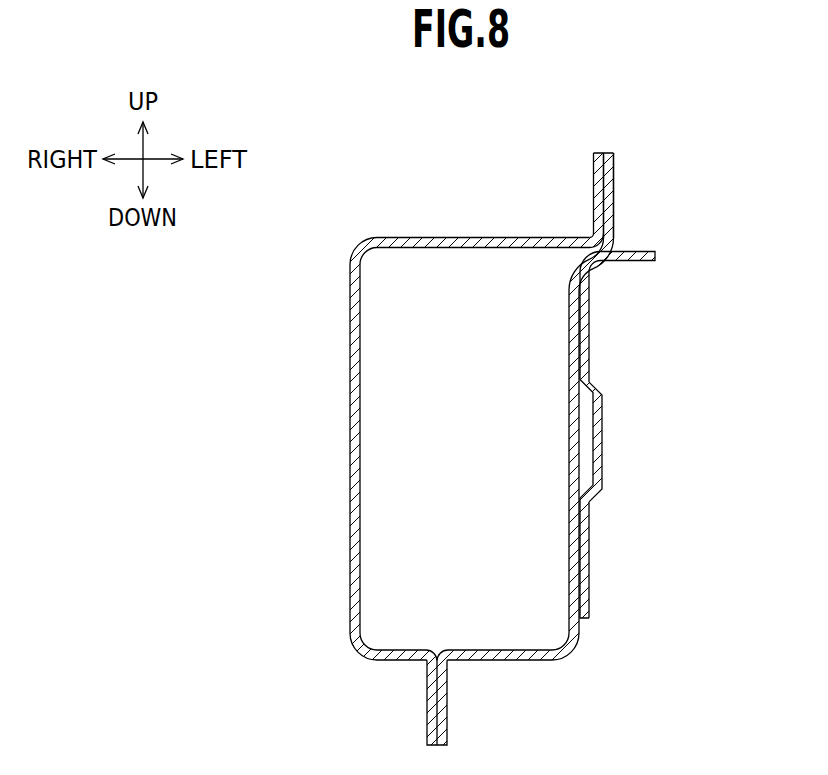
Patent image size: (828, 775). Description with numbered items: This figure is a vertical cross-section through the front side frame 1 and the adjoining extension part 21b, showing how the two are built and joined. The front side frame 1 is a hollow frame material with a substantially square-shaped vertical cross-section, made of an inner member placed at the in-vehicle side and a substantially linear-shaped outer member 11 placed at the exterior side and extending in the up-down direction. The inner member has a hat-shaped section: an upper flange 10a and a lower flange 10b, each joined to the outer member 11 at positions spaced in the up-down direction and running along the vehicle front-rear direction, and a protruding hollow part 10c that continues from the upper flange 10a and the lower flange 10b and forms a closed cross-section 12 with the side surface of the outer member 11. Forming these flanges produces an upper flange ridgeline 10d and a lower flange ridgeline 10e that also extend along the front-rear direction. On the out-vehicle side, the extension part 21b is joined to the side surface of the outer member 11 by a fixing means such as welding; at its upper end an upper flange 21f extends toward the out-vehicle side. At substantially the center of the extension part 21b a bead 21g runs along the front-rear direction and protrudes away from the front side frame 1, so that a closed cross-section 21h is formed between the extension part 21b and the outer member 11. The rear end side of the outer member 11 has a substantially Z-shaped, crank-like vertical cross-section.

The front side frame 1 is at (346, 385).
The upper flange 10a is at (593, 193).
The lower flange 10b is at (428, 712).
The protruding hollow part 10c is at (350, 485).
The upper flange ridgeline 10d is at (591, 234).
The lower flange ridgeline 10e is at (426, 666).
The outer member 11 is at (613, 193).
The closed cross-section 12 is at (481, 468).
The extension part 21b is at (594, 339).
The upper flange 21f is at (646, 251).
The bead 21g is at (602, 436).
The closed cross-section 21h is at (584, 458).